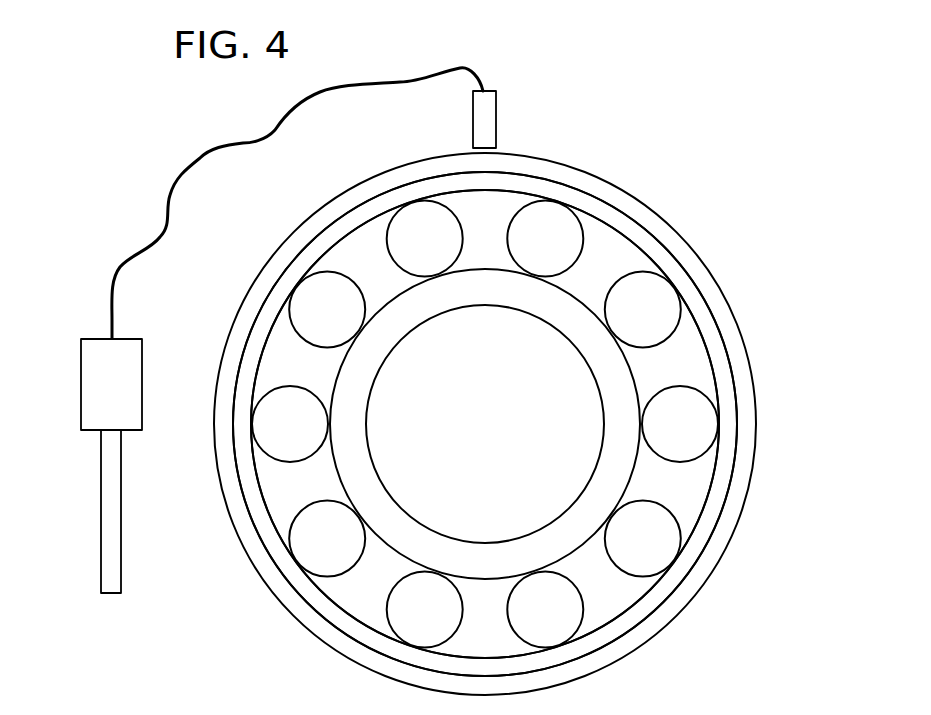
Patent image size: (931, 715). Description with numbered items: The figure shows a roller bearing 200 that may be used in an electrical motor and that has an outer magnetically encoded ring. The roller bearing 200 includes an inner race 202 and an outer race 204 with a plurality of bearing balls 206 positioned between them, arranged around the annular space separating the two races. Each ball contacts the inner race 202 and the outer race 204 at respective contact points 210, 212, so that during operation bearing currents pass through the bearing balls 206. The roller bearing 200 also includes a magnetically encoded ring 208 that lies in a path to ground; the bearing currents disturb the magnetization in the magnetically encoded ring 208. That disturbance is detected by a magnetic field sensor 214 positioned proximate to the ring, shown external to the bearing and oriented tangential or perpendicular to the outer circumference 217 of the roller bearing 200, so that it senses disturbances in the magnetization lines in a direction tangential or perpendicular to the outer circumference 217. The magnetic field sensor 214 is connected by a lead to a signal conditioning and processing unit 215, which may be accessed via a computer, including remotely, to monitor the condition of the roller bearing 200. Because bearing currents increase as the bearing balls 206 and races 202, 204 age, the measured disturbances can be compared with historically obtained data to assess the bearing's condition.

The roller bearing 200 is at (743, 116).
The inner race 202 is at (615, 427).
The outer race 204 is at (635, 615).
The bearing balls 206 is at (313, 298).
The magnetically encoded ring 208 is at (740, 513).
The contact point 210 is at (612, 320).
The contact point 212 is at (670, 285).
The magnetic field sensor 214 is at (497, 131).
The signal conditioning and processing unit 215 is at (82, 373).
The outer circumference 217 is at (220, 483).